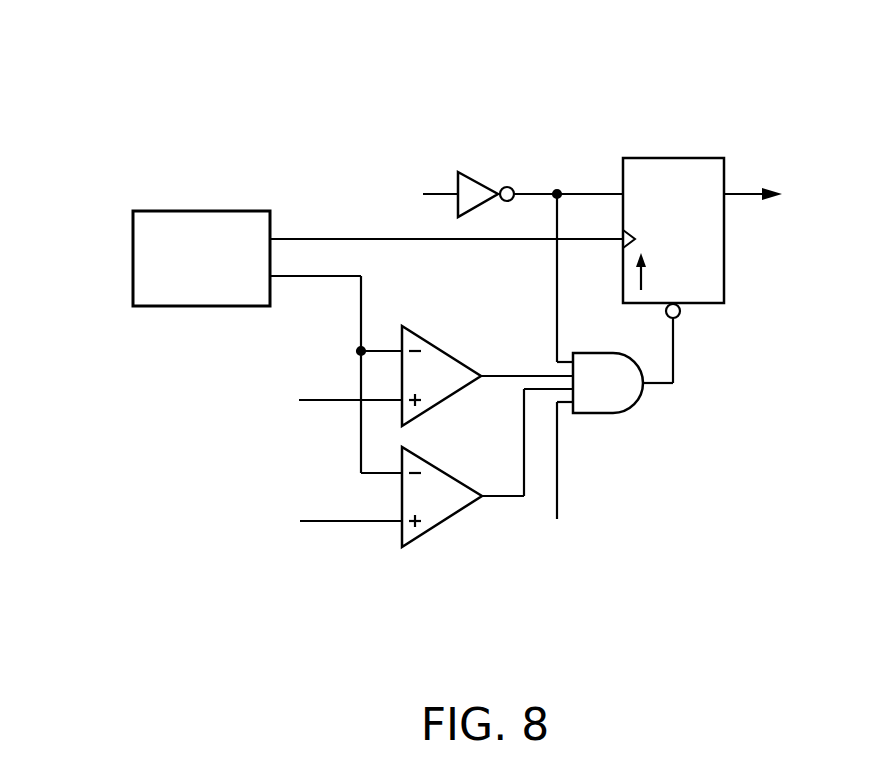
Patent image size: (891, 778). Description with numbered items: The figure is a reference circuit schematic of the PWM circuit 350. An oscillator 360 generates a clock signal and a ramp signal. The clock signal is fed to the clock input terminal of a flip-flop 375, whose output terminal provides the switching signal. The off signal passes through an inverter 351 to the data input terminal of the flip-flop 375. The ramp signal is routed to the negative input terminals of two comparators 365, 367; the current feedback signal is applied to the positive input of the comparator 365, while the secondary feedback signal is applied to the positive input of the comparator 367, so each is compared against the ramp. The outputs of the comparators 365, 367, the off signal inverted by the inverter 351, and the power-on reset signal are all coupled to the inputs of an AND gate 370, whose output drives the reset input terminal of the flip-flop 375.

The PWM circuit 350 is at (868, 67).
The inverter 351 is at (486, 184).
The oscillator 360 is at (201, 244).
The comparator 365 is at (441, 370).
The comparator 367 is at (442, 504).
The AND gate 370 is at (608, 370).
The flip-flop 375 is at (673, 225).